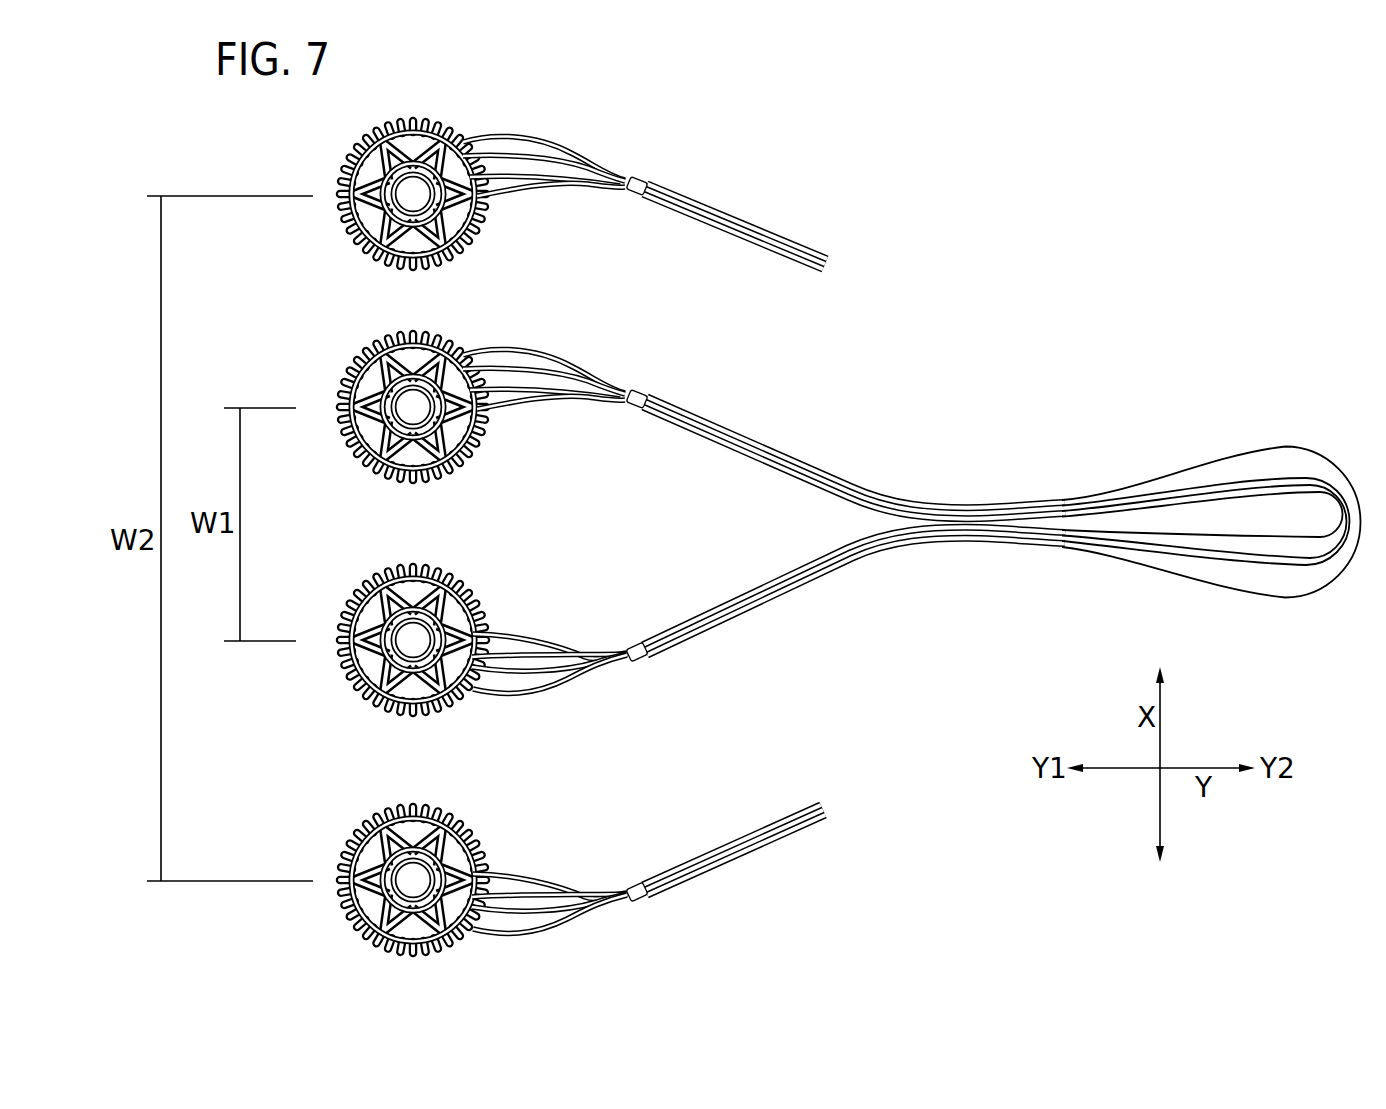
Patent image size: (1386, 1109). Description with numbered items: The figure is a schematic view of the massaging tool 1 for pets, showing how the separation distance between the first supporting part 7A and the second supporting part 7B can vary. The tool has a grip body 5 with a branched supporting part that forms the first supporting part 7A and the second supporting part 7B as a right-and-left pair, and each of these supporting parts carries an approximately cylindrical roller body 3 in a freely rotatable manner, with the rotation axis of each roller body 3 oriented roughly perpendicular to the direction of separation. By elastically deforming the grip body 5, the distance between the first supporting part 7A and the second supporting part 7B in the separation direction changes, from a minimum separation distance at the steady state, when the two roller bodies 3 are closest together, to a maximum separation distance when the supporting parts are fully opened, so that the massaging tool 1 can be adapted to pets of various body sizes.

The massaging tool for pets 1 is at (1018, 380).
The roller body 3 is at (466, 246).
The grip body 5 is at (1263, 462).
The first supporting part 7A is at (680, 203).
The second supporting part 7B is at (697, 638).